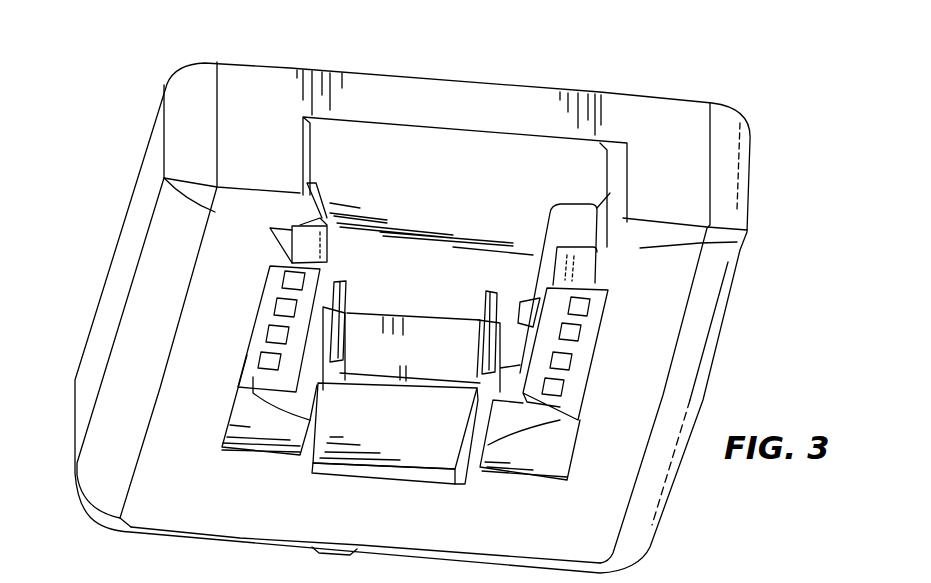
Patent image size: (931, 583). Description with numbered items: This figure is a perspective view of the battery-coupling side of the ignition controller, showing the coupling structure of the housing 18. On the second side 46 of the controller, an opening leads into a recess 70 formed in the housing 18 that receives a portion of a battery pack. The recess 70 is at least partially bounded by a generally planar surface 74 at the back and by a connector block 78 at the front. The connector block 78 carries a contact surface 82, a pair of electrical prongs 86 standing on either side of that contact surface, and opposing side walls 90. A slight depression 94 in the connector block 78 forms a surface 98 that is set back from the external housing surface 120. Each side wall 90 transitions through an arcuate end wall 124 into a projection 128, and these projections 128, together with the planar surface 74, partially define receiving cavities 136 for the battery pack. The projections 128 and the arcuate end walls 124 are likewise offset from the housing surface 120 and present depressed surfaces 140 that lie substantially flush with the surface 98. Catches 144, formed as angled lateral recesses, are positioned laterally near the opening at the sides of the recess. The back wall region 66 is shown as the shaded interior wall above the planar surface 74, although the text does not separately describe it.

The housing 18 is at (146, 37).
The second side 46 is at (677, 73).
The back wall 66 is at (462, 155).
The recess 70 is at (497, 243).
The planar surface 74 is at (470, 197).
The connector block 78 is at (413, 302).
The contact surface 82 is at (425, 369).
The electrical prongs 86 is at (343, 281).
The side walls 90 is at (275, 390).
The depression 94 is at (400, 440).
The surface 98 is at (415, 423).
The external housing surface 120 is at (365, 535).
The arcuate end wall 124 is at (273, 403).
The projection 128 is at (308, 310).
The receiving cavities 136 is at (322, 200).
The depressed surfaces 140 is at (257, 433).
The catches 144 is at (275, 228).